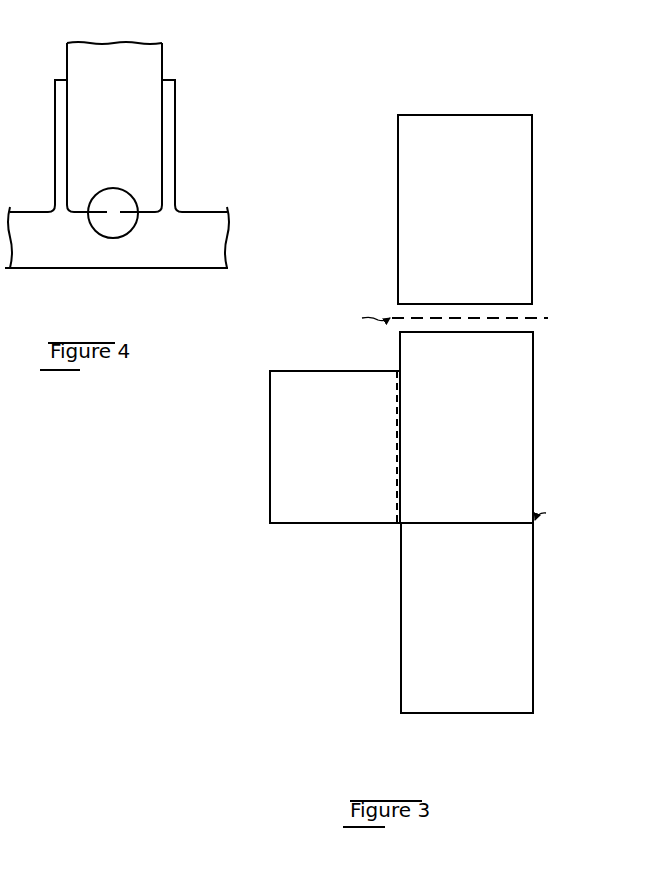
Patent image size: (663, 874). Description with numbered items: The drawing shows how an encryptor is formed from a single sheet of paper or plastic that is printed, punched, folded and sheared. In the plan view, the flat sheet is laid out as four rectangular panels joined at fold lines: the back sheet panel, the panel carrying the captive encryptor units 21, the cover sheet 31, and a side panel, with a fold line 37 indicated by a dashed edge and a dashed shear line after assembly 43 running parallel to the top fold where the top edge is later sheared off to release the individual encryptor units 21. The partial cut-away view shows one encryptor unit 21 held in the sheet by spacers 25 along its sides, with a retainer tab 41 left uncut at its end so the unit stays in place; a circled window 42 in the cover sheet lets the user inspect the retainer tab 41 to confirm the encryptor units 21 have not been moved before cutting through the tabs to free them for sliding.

In FIG. 4, the encryptor unit 21 is at (115, 43).
In FIG. 4, the spacers 25 is at (61, 80).
In FIG. 4, the retainer tabs 41 is at (118, 207).
In FIG. 4, the window in cover sheet 42 is at (125, 240).
In FIG. 3, the cover sheet 31 is at (534, 587).
In FIG. 3, the fold line 37 is at (396, 400).
In FIG. 3, the shear line after assembly 43 is at (521, 331).